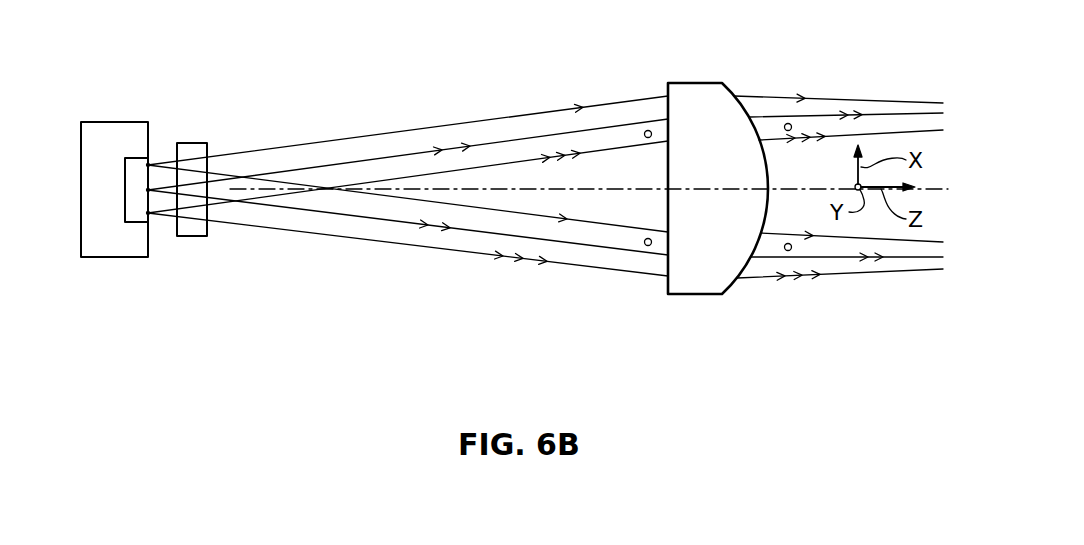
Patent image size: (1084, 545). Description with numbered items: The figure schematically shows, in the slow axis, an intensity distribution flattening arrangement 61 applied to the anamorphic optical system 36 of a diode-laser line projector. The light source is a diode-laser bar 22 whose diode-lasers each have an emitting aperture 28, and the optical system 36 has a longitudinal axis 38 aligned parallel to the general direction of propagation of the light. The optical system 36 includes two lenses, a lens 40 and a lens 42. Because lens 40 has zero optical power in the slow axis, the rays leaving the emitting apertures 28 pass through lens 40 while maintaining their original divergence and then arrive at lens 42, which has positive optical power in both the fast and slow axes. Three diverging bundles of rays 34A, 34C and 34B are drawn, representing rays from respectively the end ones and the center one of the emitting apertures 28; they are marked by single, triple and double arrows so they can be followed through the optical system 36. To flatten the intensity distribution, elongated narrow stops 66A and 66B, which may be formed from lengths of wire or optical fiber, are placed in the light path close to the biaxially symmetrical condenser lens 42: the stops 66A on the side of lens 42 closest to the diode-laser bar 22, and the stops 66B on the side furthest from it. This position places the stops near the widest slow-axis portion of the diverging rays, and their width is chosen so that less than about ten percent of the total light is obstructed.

The diode-laser bar 22 is at (140, 224).
The emitting aperture 28 is at (152, 161).
The lens 40 is at (197, 140).
The diverging set of rays 34A is at (645, 93).
The diverging set of rays 34B is at (380, 156).
The diverging set of rays 34C is at (492, 254).
The longitudinal axis 38 is at (423, 191).
The lens 42 is at (706, 82).
The arrangement 61 is at (602, 253).
The stops 66A is at (646, 246).
The stops 66B is at (785, 124).
The optical system 36 is at (720, 364).